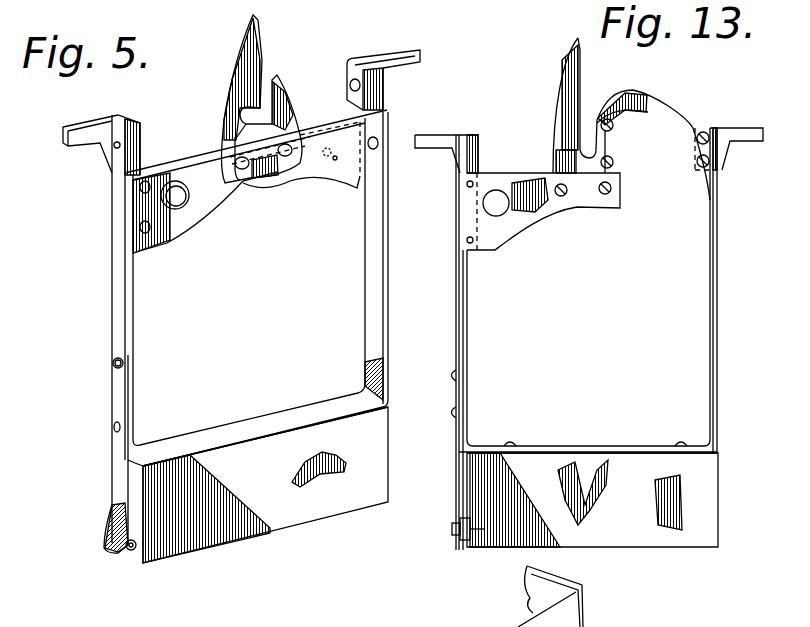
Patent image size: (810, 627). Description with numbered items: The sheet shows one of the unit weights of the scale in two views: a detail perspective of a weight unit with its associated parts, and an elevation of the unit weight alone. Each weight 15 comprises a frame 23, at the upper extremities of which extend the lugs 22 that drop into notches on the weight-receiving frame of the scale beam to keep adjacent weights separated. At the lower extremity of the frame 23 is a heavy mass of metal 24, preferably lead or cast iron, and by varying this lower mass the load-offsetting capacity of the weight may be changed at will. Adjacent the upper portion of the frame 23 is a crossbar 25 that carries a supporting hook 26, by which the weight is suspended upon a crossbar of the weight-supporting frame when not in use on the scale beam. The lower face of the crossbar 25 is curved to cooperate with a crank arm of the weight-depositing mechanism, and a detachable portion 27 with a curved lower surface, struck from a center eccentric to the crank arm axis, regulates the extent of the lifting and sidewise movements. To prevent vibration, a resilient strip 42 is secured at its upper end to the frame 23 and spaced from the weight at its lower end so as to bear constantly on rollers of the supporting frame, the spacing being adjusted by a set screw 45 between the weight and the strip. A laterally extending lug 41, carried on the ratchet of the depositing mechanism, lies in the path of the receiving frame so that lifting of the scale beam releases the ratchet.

In FIG. 5, the weight 15 is at (328, 507).
In FIG. 13, the weight 15 is at (592, 487).
In FIG. 5, the lug 22 is at (81, 128).
In FIG. 13, the lug 22 is at (433, 140).
In FIG. 5, the frame 23 is at (370, 288).
In FIG. 13, the frame 23 is at (717, 313).
In FIG. 5, the heavy mass of metal 24 is at (197, 545).
In FIG. 13, the heavy mass of metal 24 is at (695, 550).
In FIG. 5, the crossbar 25 is at (181, 170).
In FIG. 13, the crossbar 25 is at (508, 226).
In FIG. 5, the supporting hook 26 is at (247, 51).
In FIG. 5, the detachable portion 27 is at (329, 180).
In FIG. 13, the laterally extending lug 41 is at (392, 626).
In FIG. 5, the resilient strip 42 is at (118, 496).
In FIG. 13, the resilient strip 42 is at (458, 518).
In FIG. 5, the set screw 45 is at (128, 552).
In FIG. 13, the set screw 45 is at (462, 540).